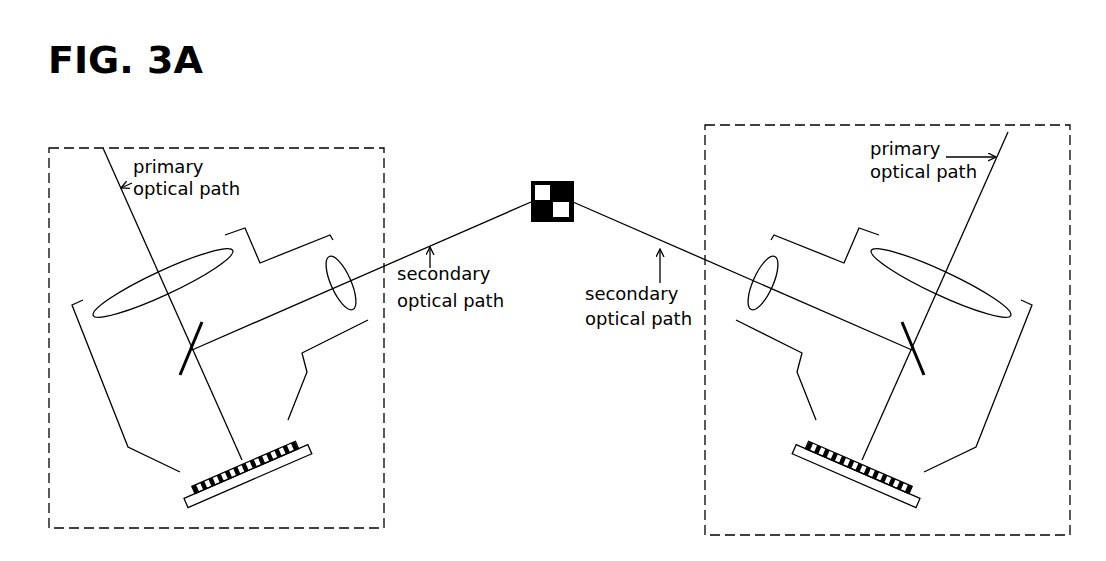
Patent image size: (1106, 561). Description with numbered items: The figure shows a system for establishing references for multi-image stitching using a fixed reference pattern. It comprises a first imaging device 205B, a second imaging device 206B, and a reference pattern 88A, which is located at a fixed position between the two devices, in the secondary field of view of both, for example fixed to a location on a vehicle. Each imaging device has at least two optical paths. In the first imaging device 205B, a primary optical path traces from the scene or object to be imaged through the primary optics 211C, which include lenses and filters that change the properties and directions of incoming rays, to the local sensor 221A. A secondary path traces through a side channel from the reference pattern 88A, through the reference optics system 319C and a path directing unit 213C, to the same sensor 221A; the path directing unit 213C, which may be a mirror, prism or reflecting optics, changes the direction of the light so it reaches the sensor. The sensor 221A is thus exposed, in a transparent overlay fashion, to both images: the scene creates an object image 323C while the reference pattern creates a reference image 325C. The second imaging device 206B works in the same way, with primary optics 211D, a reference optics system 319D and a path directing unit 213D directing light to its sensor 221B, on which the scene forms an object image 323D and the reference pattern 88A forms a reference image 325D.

The first imaging device 205B is at (268, 148).
The second imaging device 206B is at (920, 125).
The primary optics 211C is at (180, 275).
The primary optics 211D is at (908, 270).
The reference optics system 319C is at (345, 292).
The reference optics system 319D is at (768, 270).
The path directing unit 213C is at (186, 353).
The path directing unit 213D is at (921, 365).
The sensor 221A is at (299, 442).
The sensor 221B is at (809, 442).
The object image 323C is at (203, 471).
The object image 323D is at (913, 460).
The reference image 325C is at (245, 454).
The reference image 325D is at (859, 454).
The reference pattern 88A is at (552, 226).